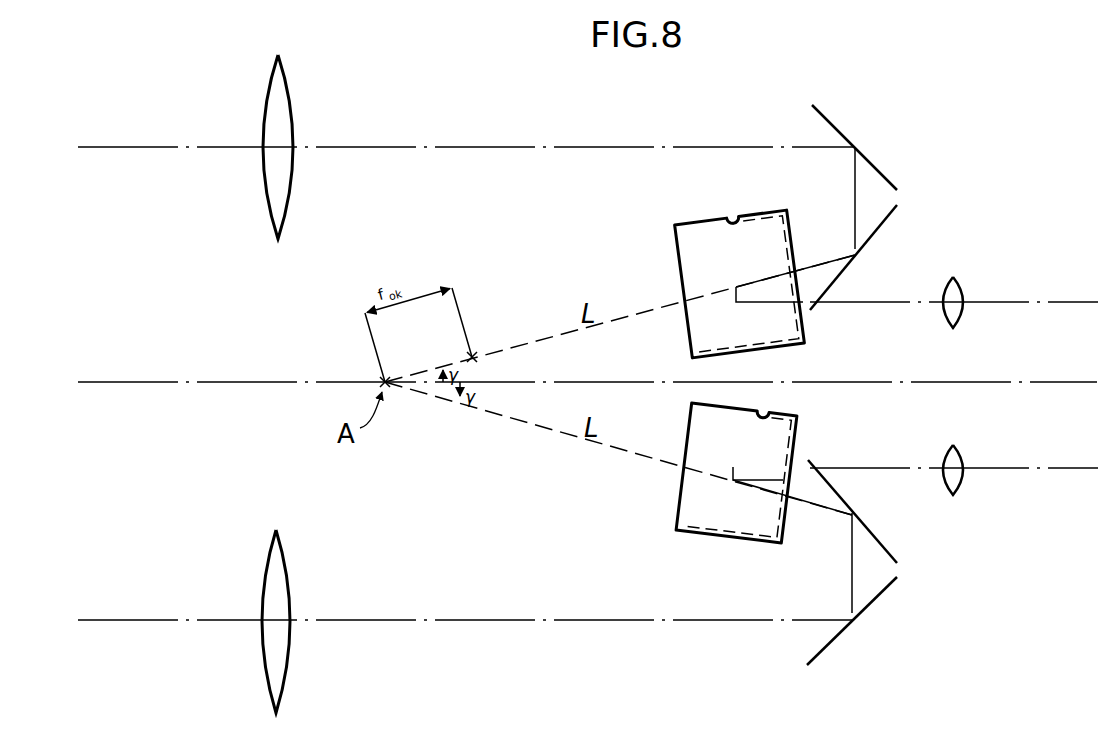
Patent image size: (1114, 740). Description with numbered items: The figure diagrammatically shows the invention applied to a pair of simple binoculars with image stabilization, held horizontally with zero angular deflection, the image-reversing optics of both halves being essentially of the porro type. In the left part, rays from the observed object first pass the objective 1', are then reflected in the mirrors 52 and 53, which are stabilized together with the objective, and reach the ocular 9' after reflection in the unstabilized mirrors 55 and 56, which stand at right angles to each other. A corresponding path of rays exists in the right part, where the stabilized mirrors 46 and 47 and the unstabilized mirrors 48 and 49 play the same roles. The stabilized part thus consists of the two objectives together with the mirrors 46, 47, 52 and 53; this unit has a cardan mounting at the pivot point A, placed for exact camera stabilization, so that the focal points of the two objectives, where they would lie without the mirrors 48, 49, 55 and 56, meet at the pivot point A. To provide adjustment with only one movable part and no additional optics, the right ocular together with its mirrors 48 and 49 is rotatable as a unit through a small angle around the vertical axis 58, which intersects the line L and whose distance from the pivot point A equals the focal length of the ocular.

The objective 1' is at (295, 601).
The ocular 9' is at (972, 456).
The mirror 46 is at (840, 130).
The mirror 47 is at (882, 227).
The mirror 48 is at (726, 220).
The mirror 49 is at (770, 211).
The mirror 52 is at (880, 597).
The mirror 53 is at (878, 540).
The mirror 55 is at (768, 418).
The mirror 56 is at (798, 426).
The vertical axis 58 is at (474, 348).